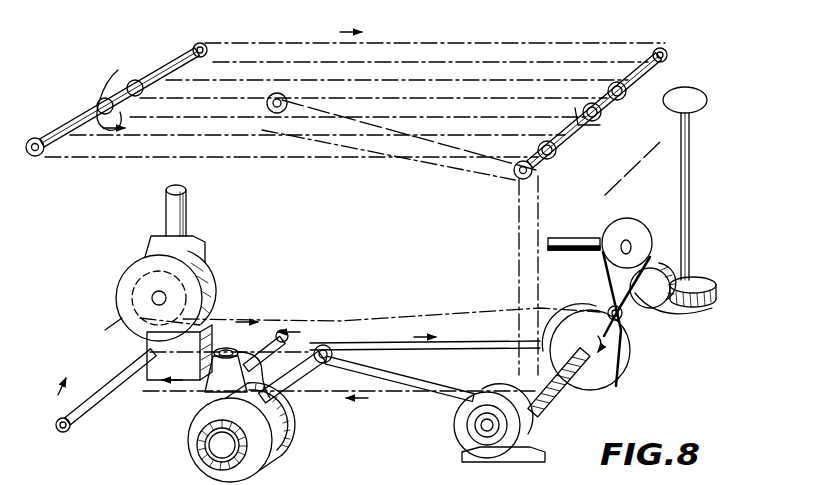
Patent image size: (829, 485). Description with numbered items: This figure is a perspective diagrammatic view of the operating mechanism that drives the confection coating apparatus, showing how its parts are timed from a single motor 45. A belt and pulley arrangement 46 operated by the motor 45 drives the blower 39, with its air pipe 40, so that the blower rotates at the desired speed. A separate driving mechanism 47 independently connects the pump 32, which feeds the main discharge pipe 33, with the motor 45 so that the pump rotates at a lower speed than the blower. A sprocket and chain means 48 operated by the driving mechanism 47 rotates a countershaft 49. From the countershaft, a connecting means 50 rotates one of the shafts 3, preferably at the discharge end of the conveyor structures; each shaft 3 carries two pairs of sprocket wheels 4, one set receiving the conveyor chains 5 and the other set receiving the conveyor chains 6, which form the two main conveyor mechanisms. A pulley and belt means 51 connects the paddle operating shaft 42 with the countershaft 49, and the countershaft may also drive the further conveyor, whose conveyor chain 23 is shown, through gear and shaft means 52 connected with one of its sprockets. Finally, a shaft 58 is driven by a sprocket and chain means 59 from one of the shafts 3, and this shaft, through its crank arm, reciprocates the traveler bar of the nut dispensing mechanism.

The shafts 3 is at (172, 66).
The sprocket wheels 4 is at (114, 86).
The conveyor chains 5 is at (213, 80).
The conveyor chains 6 is at (88, 125).
The conveyor chain 23 is at (692, 136).
The pump 32 is at (212, 270).
The main discharge pipe 33 is at (188, 220).
The blower 39 is at (190, 440).
The air pipe 40 is at (367, 390).
The shaft 42 is at (580, 240).
The motor 45 is at (548, 450).
The belt and pulley arrangement 46 is at (410, 380).
The driving mechanism 47 is at (117, 323).
The sprocket and chain means 48 is at (377, 348).
The countershaft 49 is at (700, 302).
The connecting means 50 is at (518, 226).
The pulley and belt means 51 is at (651, 305).
The gear and shaft means 52 is at (694, 268).
The shaft 58 is at (277, 113).
The sprocket and chain means 59 is at (462, 143).